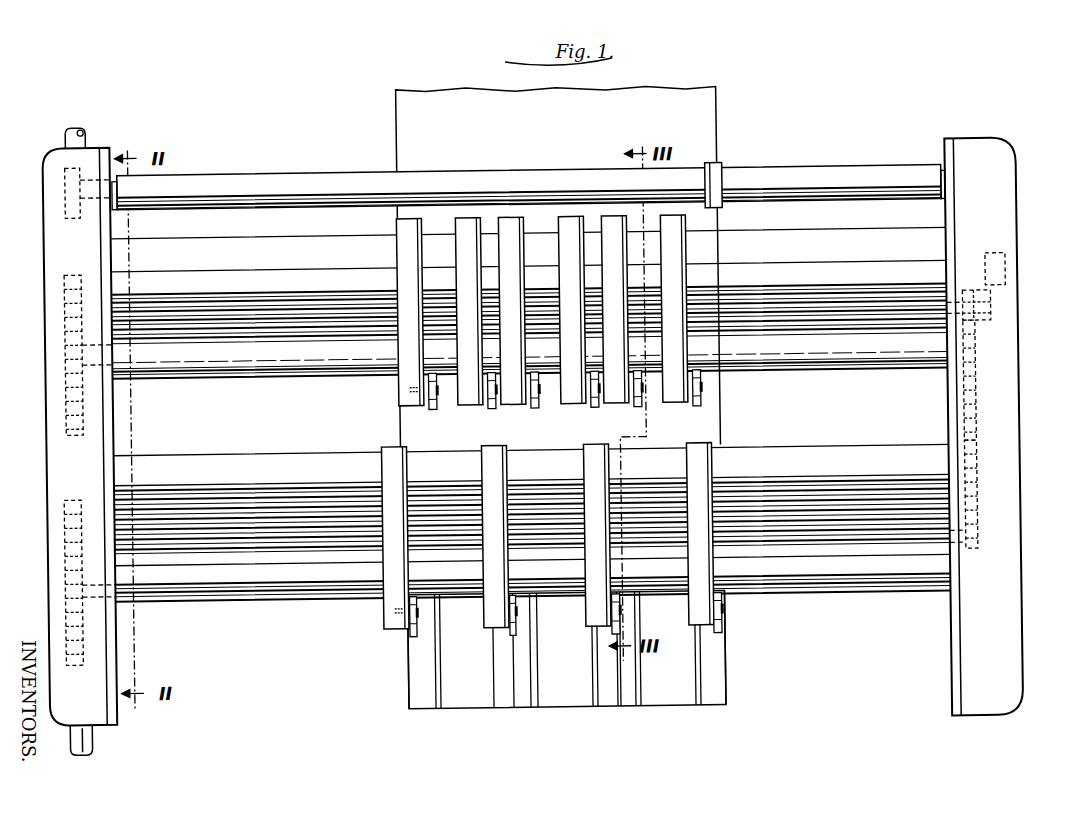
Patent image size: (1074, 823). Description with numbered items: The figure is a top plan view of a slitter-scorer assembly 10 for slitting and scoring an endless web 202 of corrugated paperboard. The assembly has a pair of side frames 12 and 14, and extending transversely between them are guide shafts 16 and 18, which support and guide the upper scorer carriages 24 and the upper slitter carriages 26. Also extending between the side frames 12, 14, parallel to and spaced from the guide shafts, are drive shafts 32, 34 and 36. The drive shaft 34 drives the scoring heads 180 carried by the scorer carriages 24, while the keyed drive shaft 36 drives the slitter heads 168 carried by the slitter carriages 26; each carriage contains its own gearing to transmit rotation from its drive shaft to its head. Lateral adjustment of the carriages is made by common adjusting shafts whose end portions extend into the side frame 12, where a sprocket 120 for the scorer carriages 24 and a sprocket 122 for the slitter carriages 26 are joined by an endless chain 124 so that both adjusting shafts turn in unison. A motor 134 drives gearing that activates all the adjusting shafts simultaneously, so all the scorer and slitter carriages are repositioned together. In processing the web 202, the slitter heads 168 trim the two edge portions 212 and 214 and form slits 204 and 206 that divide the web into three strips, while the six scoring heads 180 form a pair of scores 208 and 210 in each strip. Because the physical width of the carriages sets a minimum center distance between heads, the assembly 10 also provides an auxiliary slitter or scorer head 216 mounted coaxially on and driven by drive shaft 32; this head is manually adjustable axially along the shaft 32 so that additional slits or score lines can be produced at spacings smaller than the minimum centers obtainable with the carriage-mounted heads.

The slitter-scorer assembly 10 is at (208, 144).
The side frame 12 is at (975, 236).
The side frame 14 is at (65, 457).
The guide shaft 16 is at (757, 259).
The guide shaft 18 is at (838, 460).
The upper scorer carriage 24 is at (408, 380).
The upper slitter carriage 26 is at (392, 620).
The drive shaft 32 is at (275, 173).
The drive shaft 34 is at (250, 370).
The drive shaft 36 is at (228, 592).
The sprocket 120 is at (965, 290).
The sprocket 122 is at (976, 552).
The endless chain 124 is at (976, 444).
The motor 134 is at (1008, 269).
The slitter head 168 is at (416, 629).
The scoring head 180 is at (433, 408).
The endless web of corrugated paperboard 202 is at (568, 707).
The slit 204 is at (617, 700).
The slit 206 is at (510, 708).
The score 208 is at (435, 707).
The score 210 is at (492, 706).
The edge portion 212 is at (404, 688).
The edge portion 214 is at (754, 647).
The auxiliary slitter or scorer head 216 is at (725, 178).